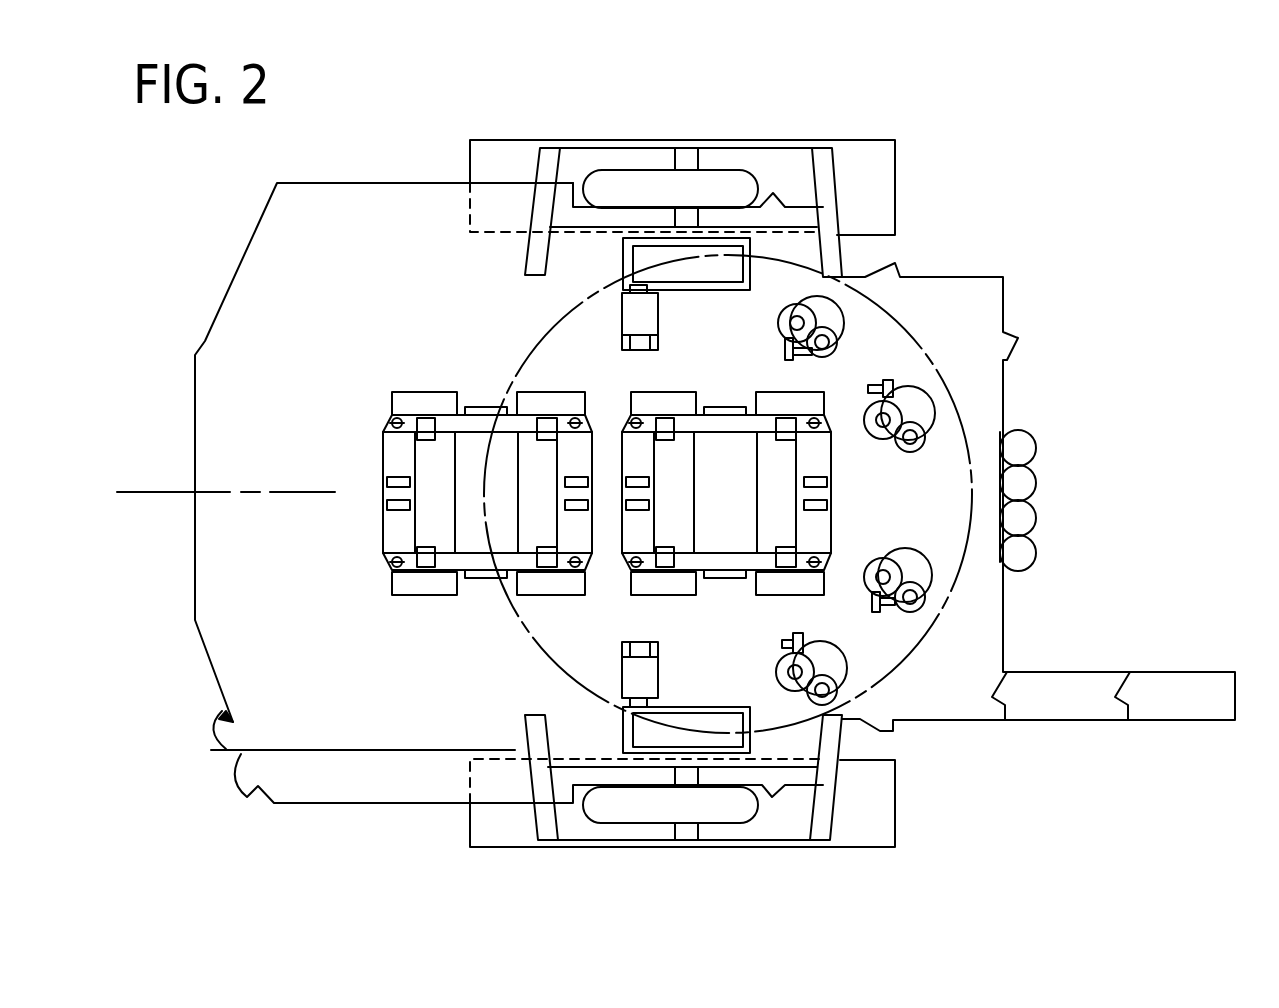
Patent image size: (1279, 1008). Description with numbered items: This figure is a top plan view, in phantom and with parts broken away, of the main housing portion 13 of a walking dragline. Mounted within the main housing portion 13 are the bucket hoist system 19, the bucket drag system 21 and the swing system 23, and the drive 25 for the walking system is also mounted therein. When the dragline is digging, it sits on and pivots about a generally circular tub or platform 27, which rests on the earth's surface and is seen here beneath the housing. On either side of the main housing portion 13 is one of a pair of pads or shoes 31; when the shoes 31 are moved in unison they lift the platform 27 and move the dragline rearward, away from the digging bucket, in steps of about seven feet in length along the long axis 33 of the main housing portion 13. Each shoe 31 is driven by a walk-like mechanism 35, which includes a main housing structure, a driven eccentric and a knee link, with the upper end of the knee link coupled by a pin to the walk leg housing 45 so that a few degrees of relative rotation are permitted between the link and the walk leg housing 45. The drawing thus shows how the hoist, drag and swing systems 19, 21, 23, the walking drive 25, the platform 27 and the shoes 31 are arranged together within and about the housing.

The main housing portion 13 is at (330, 193).
The bucket hoist system 19 is at (798, 393).
The bucket drag system 21 is at (433, 391).
The swing system 23 is at (843, 318).
The drive 25 is at (658, 336).
The platform 27 is at (928, 355).
The shoes 31 is at (895, 170).
The long axis 33 is at (211, 488).
The walk-like mechanism 35 is at (733, 829).
The walk leg housing 45 is at (618, 807).